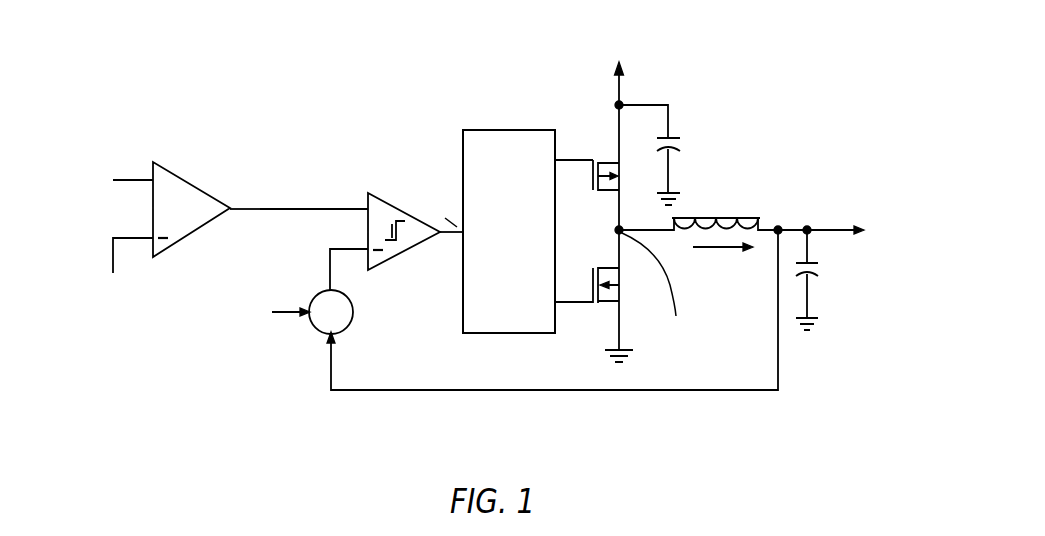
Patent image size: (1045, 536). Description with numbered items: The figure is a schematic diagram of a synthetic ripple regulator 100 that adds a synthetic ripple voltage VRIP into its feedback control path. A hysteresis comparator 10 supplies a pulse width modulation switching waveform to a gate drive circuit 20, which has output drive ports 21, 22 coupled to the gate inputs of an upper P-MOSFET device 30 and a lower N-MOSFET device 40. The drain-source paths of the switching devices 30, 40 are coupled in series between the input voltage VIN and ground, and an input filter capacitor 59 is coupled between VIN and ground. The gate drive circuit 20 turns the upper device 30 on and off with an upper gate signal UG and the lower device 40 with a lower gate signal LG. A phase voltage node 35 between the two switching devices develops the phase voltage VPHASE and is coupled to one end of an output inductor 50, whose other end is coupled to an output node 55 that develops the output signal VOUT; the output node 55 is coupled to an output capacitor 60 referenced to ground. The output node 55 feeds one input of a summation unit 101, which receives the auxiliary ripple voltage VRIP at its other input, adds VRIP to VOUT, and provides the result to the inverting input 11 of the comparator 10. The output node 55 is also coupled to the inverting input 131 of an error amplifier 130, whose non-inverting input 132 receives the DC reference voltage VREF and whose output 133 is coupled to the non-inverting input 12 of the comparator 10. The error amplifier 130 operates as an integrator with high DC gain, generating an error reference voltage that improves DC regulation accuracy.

The synthetic ripple regulator 100 is at (772, 100).
The error amplifier 130 is at (196, 187).
The non-inverting input 132 is at (138, 180).
The inverting input 131 is at (148, 237).
The output 133 is at (232, 207).
The non-inverting input 12 is at (338, 210).
The hysteresis comparator 10 is at (403, 209).
The inverting input 11 is at (356, 249).
The summation unit 101 is at (347, 331).
The gate drive circuit 20 is at (521, 130).
The output drive port 21 is at (556, 160).
The output drive port 22 is at (558, 302).
The upper P-MOSFET device 30 is at (624, 176).
The lower N-MOSFET device 40 is at (619, 287).
The phase voltage node 35 is at (616, 230).
The output inductor 50 is at (736, 217).
The output node 55 is at (778, 226).
The input filter capacitor 59 is at (672, 135).
The output capacitor 60 is at (822, 268).